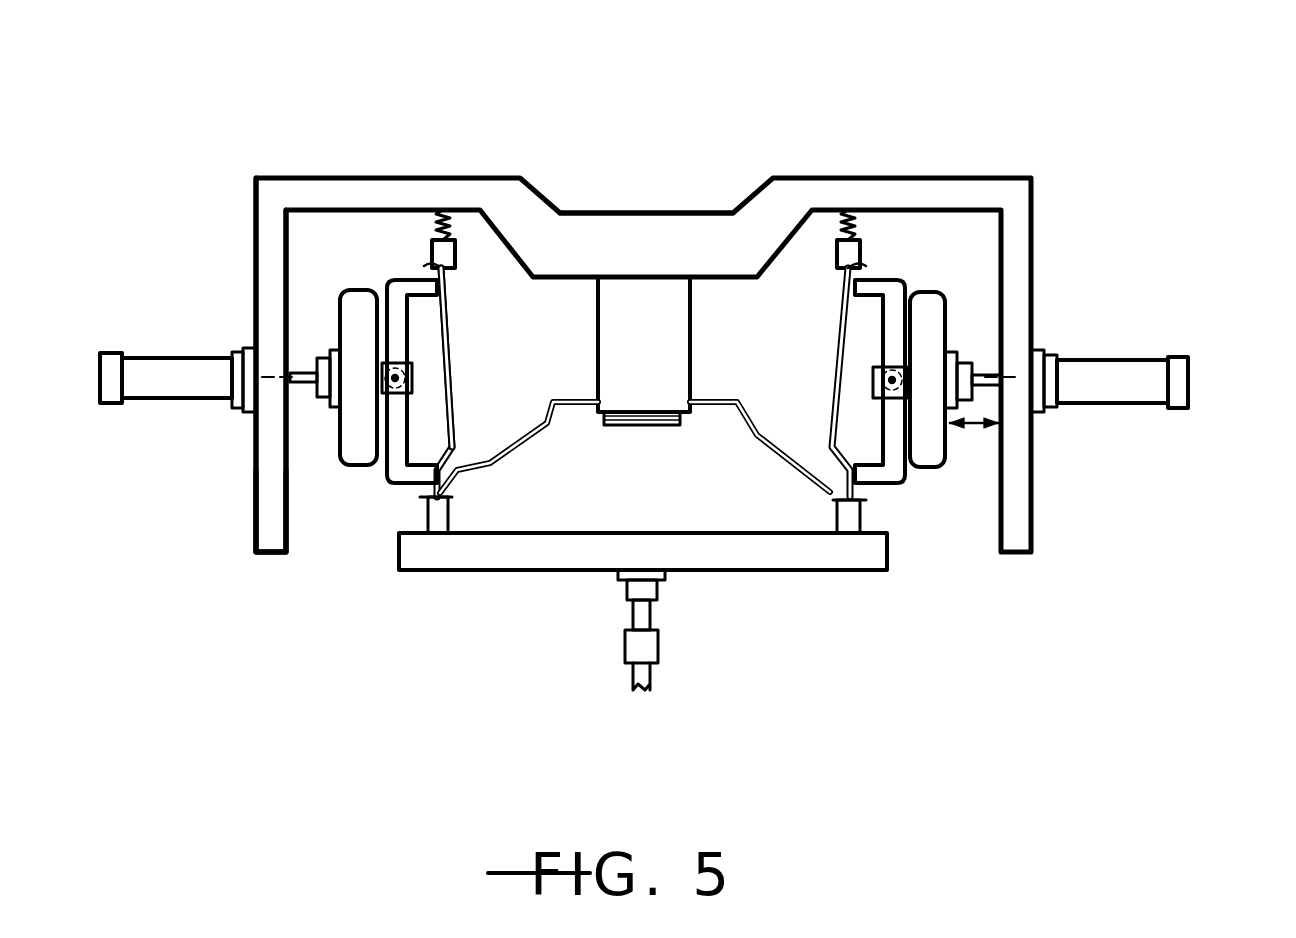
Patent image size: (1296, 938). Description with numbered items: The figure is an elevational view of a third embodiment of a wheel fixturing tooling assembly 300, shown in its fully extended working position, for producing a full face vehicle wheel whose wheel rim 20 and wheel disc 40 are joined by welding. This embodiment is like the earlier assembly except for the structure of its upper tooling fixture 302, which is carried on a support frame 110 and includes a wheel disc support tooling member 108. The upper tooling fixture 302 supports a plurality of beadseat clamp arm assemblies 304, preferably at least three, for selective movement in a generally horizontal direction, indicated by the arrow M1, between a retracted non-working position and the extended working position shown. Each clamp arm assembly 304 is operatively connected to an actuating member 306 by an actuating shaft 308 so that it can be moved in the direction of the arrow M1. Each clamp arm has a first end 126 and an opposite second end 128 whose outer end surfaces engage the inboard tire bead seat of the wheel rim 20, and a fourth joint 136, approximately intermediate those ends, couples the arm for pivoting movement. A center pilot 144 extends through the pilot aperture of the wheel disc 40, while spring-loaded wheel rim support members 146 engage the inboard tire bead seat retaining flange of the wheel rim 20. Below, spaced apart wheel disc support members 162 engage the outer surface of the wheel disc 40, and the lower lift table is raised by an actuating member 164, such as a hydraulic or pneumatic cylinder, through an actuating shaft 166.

The wheel fixturing tooling assembly 300 is at (1015, 72).
The upper tooling fixture 302 is at (1040, 168).
The wheel disc support tooling member 108 is at (622, 205).
The beadseat clamp arm assembly 304 is at (337, 480).
The support frame 110 is at (250, 473).
The center pilot 144 is at (678, 327).
The wheel rim support member 146 is at (425, 250).
The second end of beadseat clamp arm 128 is at (417, 293).
The wheel rim 20 is at (458, 358).
The first end of beadseat clamp arm 126 is at (407, 490).
The fourth joint 136 is at (416, 378).
The actuating shaft 308 is at (302, 372).
The actuating member 306 is at (160, 350).
The arrow M1 is at (975, 428).
The wheel disc 40 is at (530, 450).
The wheel disc support member 162 is at (438, 515).
The actuating shaft 166 is at (638, 608).
The actuating member 164 is at (647, 648).